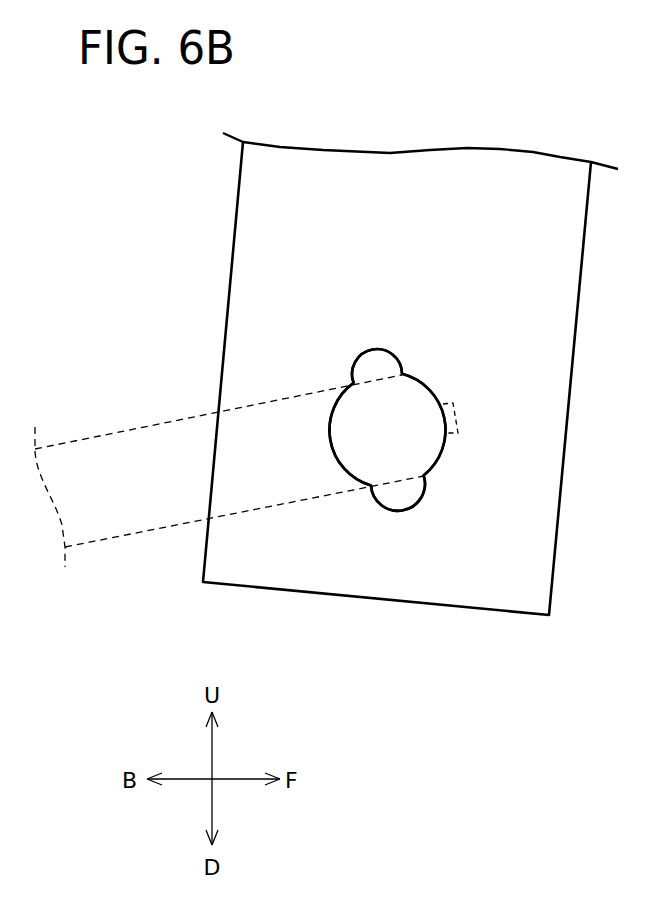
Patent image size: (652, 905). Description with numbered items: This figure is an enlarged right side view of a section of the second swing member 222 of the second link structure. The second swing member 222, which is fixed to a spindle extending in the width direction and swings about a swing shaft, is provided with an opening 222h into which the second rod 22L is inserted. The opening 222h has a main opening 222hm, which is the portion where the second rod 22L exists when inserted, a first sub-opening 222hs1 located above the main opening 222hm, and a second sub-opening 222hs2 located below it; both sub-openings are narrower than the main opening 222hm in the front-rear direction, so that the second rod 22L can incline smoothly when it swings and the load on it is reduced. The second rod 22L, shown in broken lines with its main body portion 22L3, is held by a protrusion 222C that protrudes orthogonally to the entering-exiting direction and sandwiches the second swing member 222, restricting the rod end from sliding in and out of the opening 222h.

The second swing member 222 is at (260, 216).
The opening 222h is at (427, 380).
The main opening 222hm is at (362, 440).
The first sub-opening 222hs1 is at (377, 363).
The second sub-opening 222hs2 is at (403, 502).
The protrusion 222C is at (458, 416).
The second rod 22L is at (158, 417).
The main body portion 22L3 is at (138, 533).